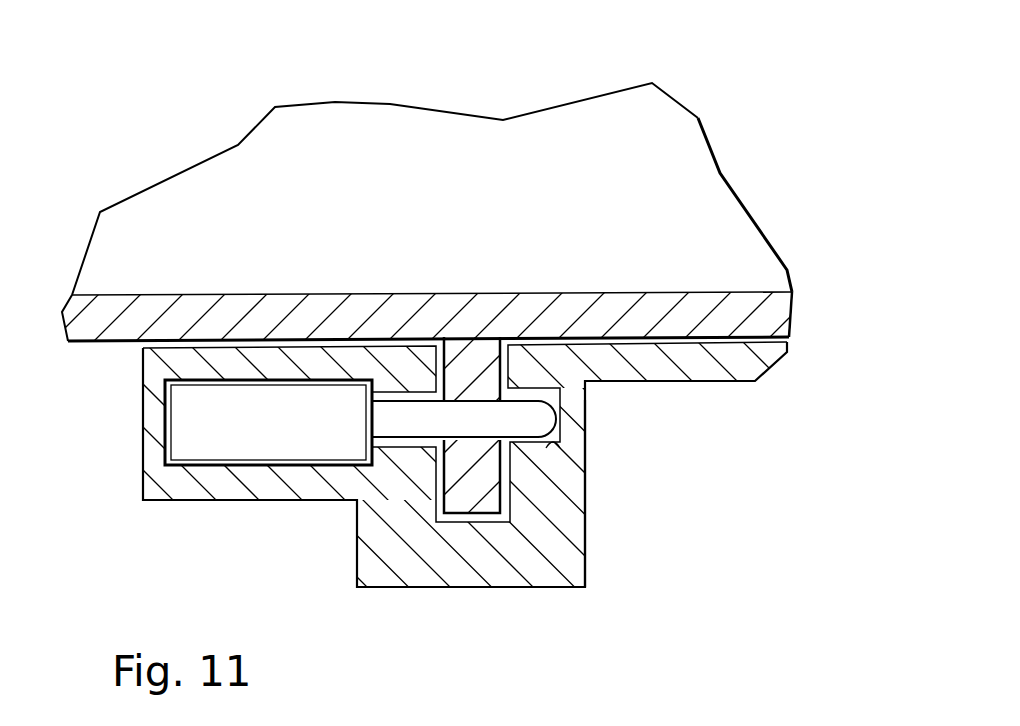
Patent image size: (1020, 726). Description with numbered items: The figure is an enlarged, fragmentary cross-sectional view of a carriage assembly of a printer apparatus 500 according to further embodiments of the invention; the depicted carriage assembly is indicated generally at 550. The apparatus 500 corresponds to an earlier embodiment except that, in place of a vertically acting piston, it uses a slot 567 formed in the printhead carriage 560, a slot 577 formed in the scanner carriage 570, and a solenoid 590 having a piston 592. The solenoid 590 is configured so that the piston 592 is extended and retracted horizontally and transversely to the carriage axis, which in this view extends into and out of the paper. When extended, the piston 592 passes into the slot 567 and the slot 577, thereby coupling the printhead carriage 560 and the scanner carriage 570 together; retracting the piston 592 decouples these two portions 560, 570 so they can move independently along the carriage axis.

The apparatus 500 is at (768, 72).
The housing assembly 550 is at (782, 188).
The printhead carriage 560 is at (693, 365).
The slot 567 is at (585, 463).
The scanner carriage 570 is at (551, 175).
The slot 577 is at (460, 449).
The solenoid 590 is at (220, 441).
The piston 592 is at (525, 422).